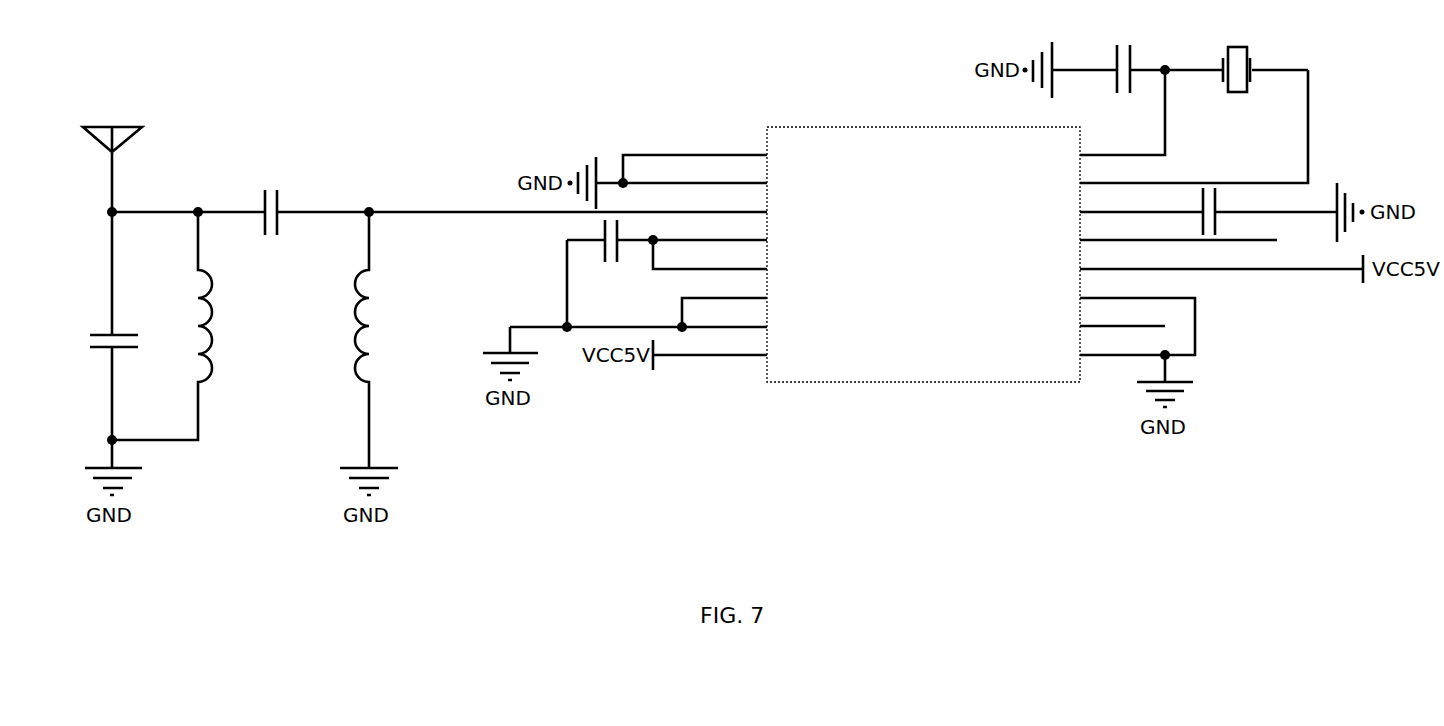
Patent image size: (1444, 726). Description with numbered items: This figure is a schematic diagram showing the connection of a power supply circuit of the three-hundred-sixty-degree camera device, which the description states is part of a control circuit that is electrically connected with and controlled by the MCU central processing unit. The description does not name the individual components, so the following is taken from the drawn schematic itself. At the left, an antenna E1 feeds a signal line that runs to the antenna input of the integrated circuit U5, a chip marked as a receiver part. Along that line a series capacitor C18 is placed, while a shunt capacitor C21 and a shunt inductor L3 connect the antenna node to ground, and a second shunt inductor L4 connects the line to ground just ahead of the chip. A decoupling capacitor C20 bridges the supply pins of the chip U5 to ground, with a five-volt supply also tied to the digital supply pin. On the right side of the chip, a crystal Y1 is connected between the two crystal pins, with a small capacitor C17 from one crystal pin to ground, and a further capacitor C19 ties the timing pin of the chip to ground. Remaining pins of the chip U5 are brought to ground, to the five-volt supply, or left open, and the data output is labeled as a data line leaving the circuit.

The antenna E1 is at (124, 216).
The capacitor 1.8PF C18 is at (277, 216).
The capacitor 6PF C21 is at (134, 398).
The inductor 33NH L3 is at (195, 323).
The inductor 68NH L4 is at (397, 337).
The capacitor 104 C20 is at (638, 260).
The receiver chip BQ3124 U5 is at (931, 256).
The capacitor 10PF C17 is at (1130, 70).
The crystal oscillator XTAL Y1 is at (1241, 71).
The capacitor 470NF C19 is at (1208, 202).